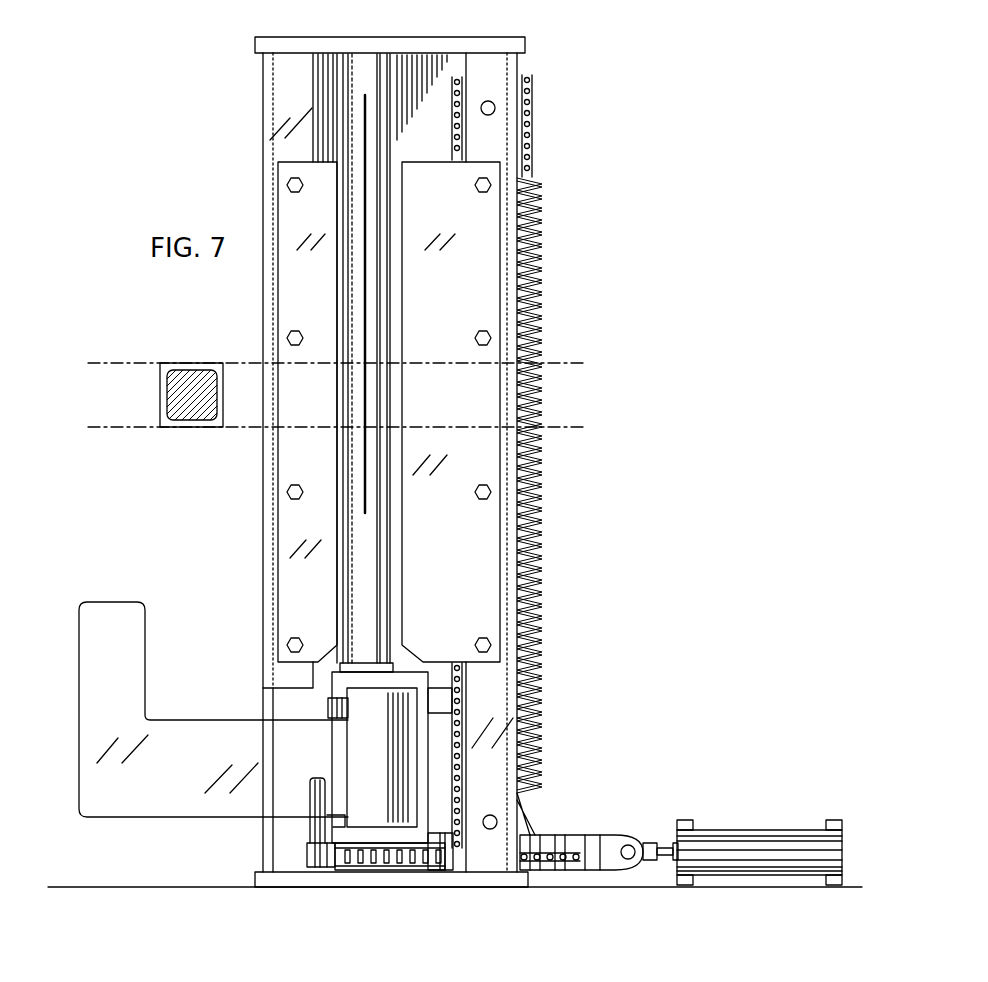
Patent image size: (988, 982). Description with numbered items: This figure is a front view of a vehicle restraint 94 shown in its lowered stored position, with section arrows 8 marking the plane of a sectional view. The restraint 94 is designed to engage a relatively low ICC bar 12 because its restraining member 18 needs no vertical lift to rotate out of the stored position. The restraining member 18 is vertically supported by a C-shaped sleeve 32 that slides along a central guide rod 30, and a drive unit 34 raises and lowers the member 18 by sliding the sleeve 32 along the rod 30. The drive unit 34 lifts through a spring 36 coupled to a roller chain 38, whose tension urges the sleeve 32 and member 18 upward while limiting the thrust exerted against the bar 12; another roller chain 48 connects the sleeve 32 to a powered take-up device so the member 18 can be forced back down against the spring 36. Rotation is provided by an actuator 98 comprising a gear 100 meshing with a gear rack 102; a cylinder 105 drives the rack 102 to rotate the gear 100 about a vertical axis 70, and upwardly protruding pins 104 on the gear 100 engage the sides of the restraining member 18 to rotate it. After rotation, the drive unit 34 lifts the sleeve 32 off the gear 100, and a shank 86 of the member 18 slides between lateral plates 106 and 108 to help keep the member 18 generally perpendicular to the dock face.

The section line 8- 8 is at (287, 62).
The ICC bar 12 is at (138, 363).
The restraining member 18 is at (164, 780).
The central guide rod 30 is at (388, 565).
The C-shaped sleeve 32 is at (410, 665).
The drive unit 34 is at (552, 192).
The spring 36 is at (543, 288).
The roller chain 38 is at (450, 147).
The roller chain 48 is at (543, 852).
The vertical axis 70 is at (365, 485).
The shank 86 is at (222, 718).
The vehicle restraint 94 is at (633, 437).
The actuator 98 is at (240, 837).
The gear 100 is at (382, 850).
The gear rack 102 is at (568, 836).
The pins 104 is at (310, 793).
The cylinder 105 is at (773, 830).
The lateral plate 106 is at (285, 311).
The lateral plate 108 is at (433, 311).